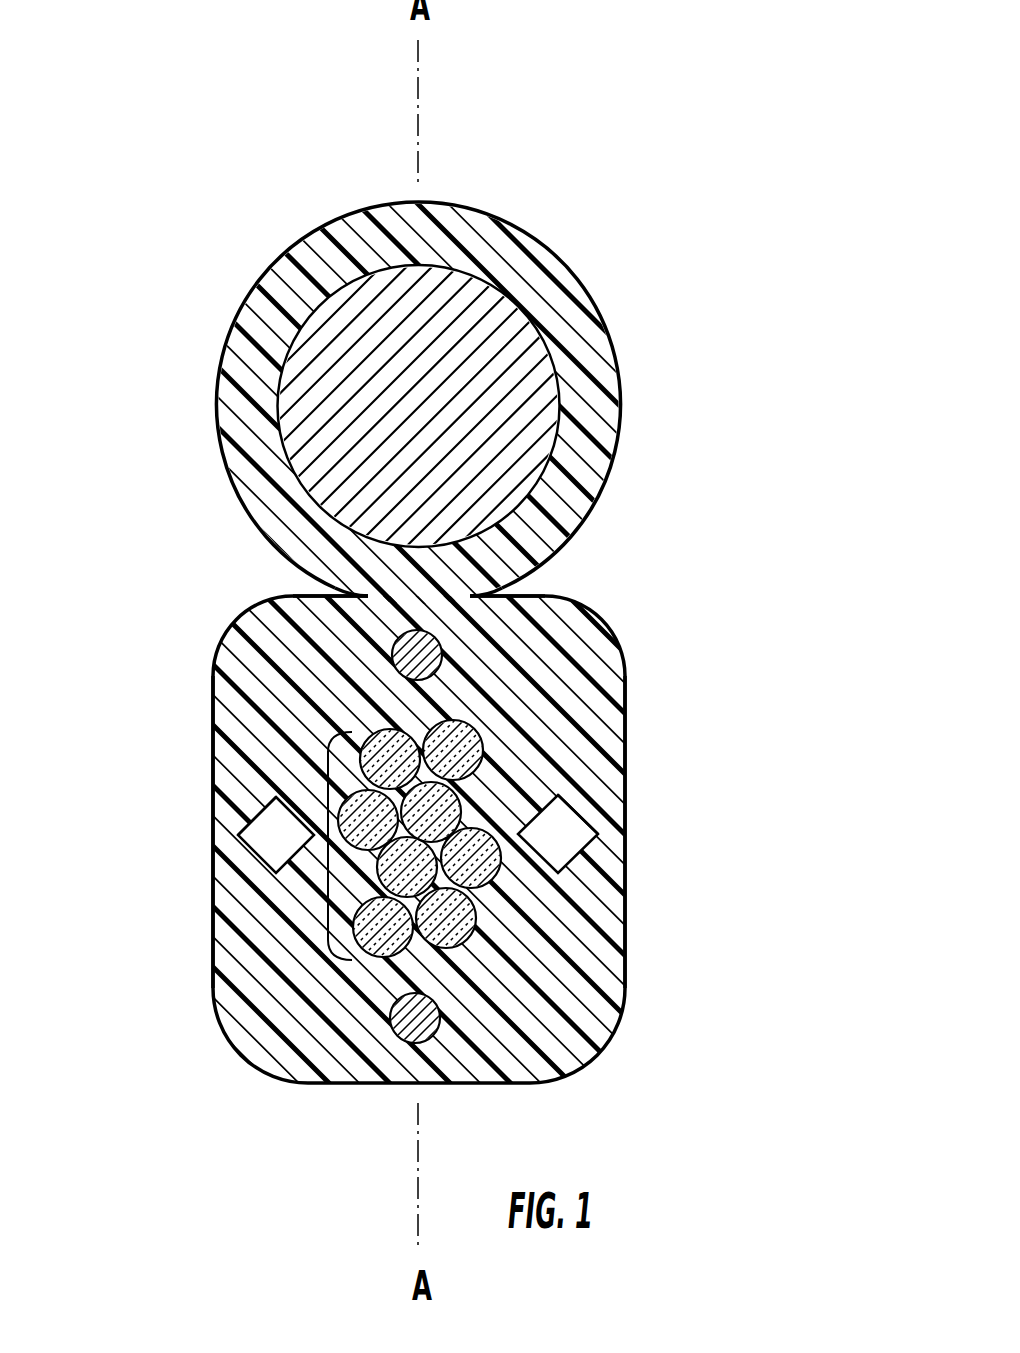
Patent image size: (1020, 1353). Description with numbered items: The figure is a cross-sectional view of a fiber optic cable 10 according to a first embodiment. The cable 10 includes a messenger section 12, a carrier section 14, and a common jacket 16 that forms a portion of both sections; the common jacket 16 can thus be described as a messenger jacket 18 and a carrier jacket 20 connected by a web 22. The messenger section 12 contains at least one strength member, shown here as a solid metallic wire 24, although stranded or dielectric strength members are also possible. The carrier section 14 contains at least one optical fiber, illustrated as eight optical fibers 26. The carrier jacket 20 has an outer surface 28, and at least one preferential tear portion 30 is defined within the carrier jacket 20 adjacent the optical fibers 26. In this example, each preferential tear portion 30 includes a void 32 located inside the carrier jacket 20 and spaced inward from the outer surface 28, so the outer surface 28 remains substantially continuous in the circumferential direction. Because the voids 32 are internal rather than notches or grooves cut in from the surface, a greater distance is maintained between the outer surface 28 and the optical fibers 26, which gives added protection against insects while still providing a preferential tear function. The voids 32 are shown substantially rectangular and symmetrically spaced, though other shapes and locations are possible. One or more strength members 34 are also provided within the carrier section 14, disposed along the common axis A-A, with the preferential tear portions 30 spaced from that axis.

The cable 10 is at (510, 676).
The messenger section 12 is at (510, 676).
The carrier section 14 is at (510, 676).
The common jacket 16 is at (273, 620).
The messenger jacket 18 is at (233, 458).
The carrier jacket 20 is at (255, 690).
The web 22 is at (473, 592).
The solid metallic wire 24 is at (513, 410).
The optical fibers 26 is at (318, 845).
The outer surface 28 is at (213, 908).
The preferential tear portion 30 is at (238, 834).
The void 32 is at (257, 817).
The strength members 34 is at (437, 636).